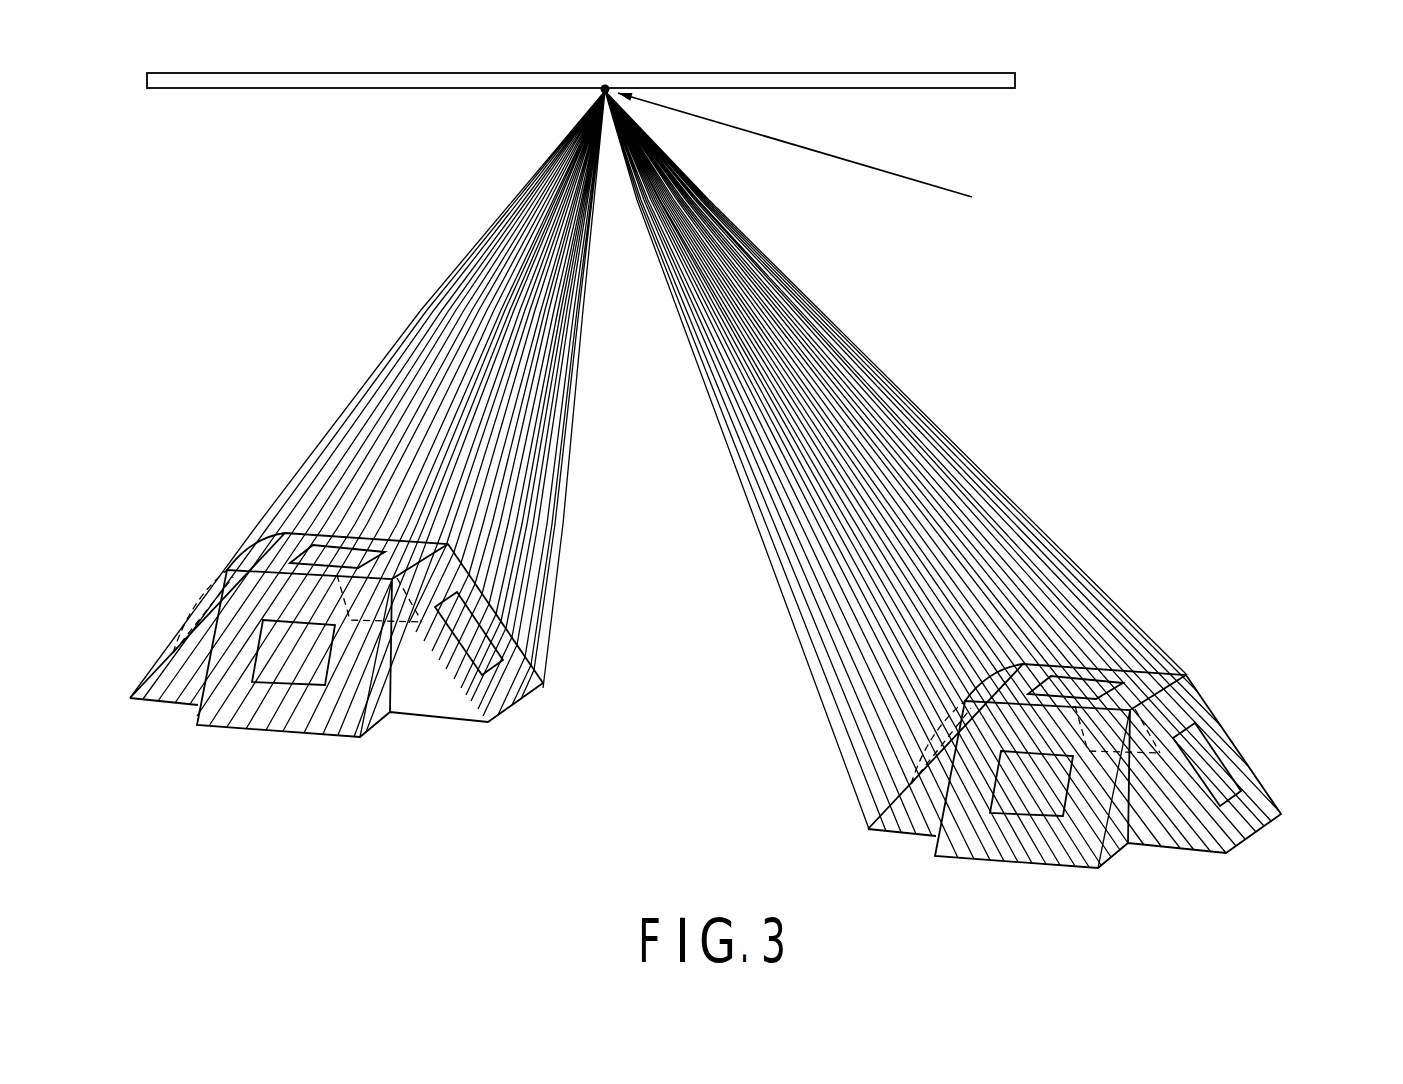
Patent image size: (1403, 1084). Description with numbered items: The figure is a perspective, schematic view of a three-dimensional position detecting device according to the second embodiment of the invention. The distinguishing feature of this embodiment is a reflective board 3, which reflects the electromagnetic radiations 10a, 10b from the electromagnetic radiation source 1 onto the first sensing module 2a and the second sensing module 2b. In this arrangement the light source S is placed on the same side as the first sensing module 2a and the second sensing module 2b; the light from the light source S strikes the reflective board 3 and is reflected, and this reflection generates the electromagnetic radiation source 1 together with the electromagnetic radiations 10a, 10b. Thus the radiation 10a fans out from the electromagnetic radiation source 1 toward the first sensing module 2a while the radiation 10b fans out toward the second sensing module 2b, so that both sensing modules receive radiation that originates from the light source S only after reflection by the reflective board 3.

The electromagnetic radiation source 1 is at (596, 94).
The reflective board 3 is at (318, 94).
The light source S is at (872, 161).
The electromagnetic radiation 10a is at (440, 293).
The electromagnetic radiation 10b is at (805, 296).
The first sensing module 2a is at (499, 598).
The second sensing module 2b is at (1239, 731).